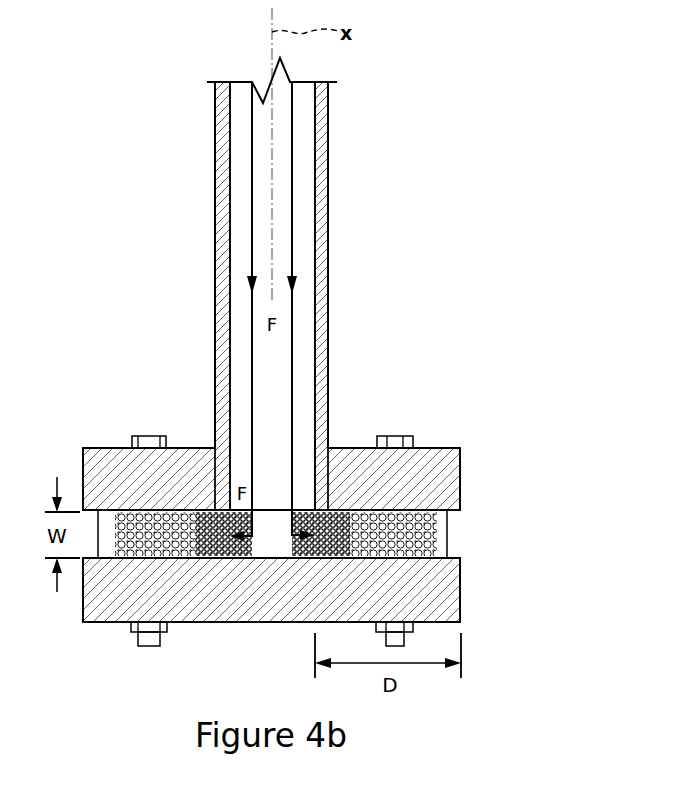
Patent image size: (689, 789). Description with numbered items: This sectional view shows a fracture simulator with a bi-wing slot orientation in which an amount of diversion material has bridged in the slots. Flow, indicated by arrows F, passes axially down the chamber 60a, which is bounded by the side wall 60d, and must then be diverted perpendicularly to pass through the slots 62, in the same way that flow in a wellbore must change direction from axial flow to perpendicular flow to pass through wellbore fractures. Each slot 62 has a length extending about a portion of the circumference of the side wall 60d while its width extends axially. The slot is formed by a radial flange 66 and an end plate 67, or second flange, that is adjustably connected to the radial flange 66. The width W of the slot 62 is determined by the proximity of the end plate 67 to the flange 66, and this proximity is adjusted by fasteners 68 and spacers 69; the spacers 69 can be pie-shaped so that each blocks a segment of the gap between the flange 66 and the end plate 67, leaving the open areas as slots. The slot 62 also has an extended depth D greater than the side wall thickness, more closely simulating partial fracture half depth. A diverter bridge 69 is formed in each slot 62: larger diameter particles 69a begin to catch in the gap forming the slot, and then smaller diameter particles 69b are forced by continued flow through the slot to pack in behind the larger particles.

The side wall 60d is at (323, 148).
The chamber 60a is at (307, 243).
The slot 62 is at (103, 525).
The radial flange 66 is at (447, 480).
The end plate 67 is at (448, 590).
The fastener 68 is at (398, 438).
The spacer 69 is at (340, 520).
The larger diameter particles 69a is at (158, 522).
The smaller diameter particles 69b is at (230, 545).